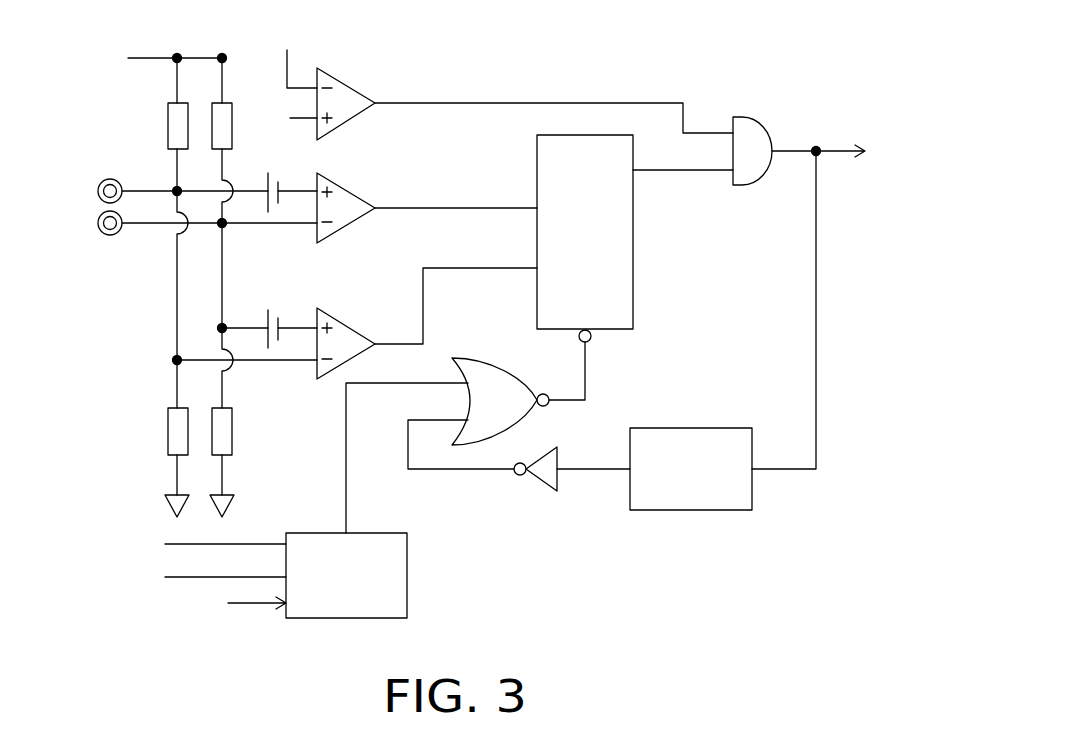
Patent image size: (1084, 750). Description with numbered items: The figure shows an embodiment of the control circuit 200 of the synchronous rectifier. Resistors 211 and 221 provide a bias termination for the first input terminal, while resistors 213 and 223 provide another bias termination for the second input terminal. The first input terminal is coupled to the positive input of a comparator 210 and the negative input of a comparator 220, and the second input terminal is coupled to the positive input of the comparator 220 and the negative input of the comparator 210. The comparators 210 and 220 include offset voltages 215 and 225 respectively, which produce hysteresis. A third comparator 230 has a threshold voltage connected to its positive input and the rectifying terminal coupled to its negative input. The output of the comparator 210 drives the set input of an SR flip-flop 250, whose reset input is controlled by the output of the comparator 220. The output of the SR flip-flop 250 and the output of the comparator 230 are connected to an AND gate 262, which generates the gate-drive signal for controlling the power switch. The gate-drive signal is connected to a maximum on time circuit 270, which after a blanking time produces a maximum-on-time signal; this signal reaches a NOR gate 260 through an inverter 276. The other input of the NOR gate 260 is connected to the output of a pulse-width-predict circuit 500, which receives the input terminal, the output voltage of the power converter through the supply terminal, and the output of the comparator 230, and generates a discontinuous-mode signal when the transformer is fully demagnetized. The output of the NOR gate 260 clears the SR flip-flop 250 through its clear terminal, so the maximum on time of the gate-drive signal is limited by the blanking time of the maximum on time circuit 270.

The control circuit 200 is at (881, 63).
The resistor 211 is at (156, 126).
The resistor 213 is at (244, 113).
The offset voltage 215 is at (277, 177).
The resistor 221 is at (155, 431).
The resistor 223 is at (243, 431).
The offset voltage 225 is at (276, 313).
The comparator 210 is at (348, 210).
The comparator 220 is at (343, 343).
The third comparator 230 is at (348, 98).
The SR flip-flop 250 is at (617, 252).
The NOR gate 260 is at (495, 380).
The AND gate 262 is at (753, 133).
The maximum on time circuit 270 is at (690, 440).
The inverter 276 is at (538, 487).
The pulse-width-predict circuit 500 is at (393, 568).